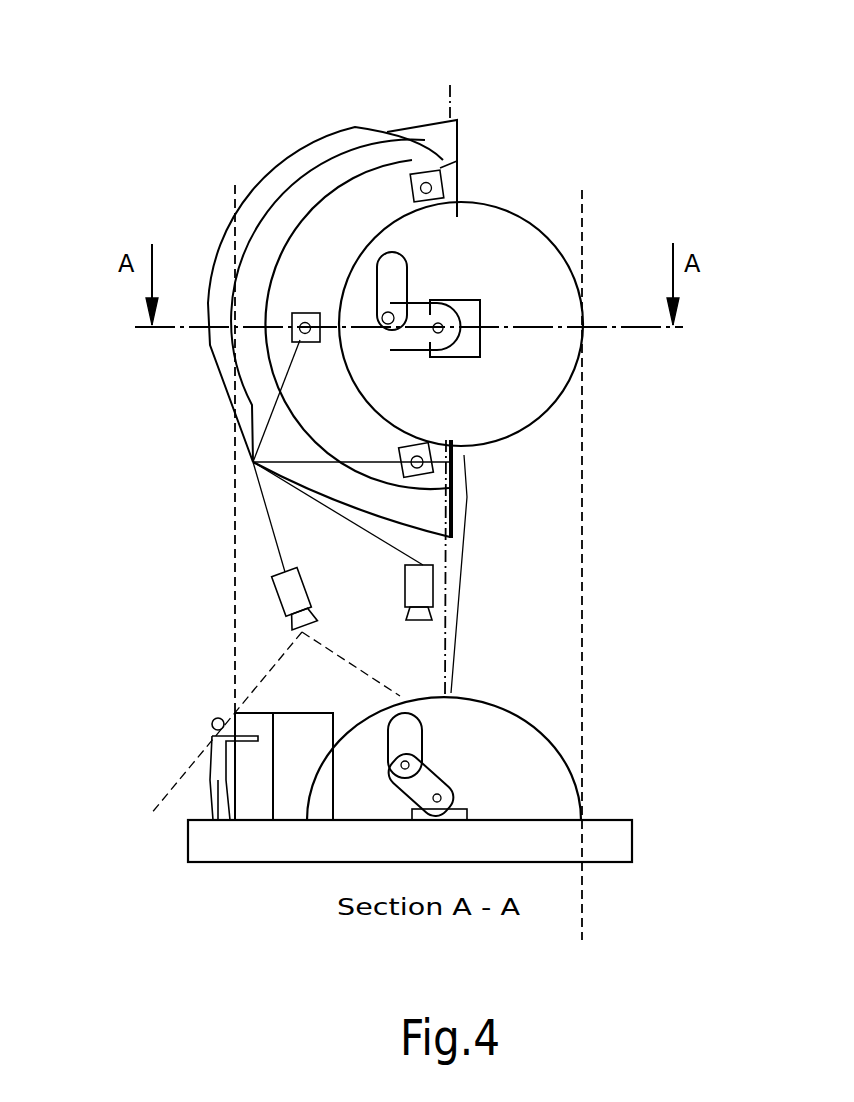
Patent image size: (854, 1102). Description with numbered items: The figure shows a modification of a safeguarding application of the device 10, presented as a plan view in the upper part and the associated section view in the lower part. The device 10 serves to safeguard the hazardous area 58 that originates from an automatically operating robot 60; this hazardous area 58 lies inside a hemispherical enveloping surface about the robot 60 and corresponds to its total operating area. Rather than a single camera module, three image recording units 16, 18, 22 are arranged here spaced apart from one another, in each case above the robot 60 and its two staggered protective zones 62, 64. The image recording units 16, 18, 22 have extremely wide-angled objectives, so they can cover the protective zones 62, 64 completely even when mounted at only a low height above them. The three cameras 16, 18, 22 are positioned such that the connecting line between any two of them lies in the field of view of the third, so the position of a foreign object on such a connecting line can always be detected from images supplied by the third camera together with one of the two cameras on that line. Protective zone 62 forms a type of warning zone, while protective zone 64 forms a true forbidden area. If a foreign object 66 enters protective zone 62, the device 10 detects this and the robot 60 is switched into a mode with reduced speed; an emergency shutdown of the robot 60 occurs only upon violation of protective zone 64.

The device 10 is at (100, 518).
The image recording unit 16 is at (424, 168).
The image recording unit 18 is at (433, 462).
The image recording unit 22 is at (251, 255).
The hazardous area 58 is at (768, 573).
The robot 60 is at (718, 731).
The protective zone 62 is at (437, 132).
The protective zone 64 is at (442, 185).
The foreign object 66 is at (207, 764).